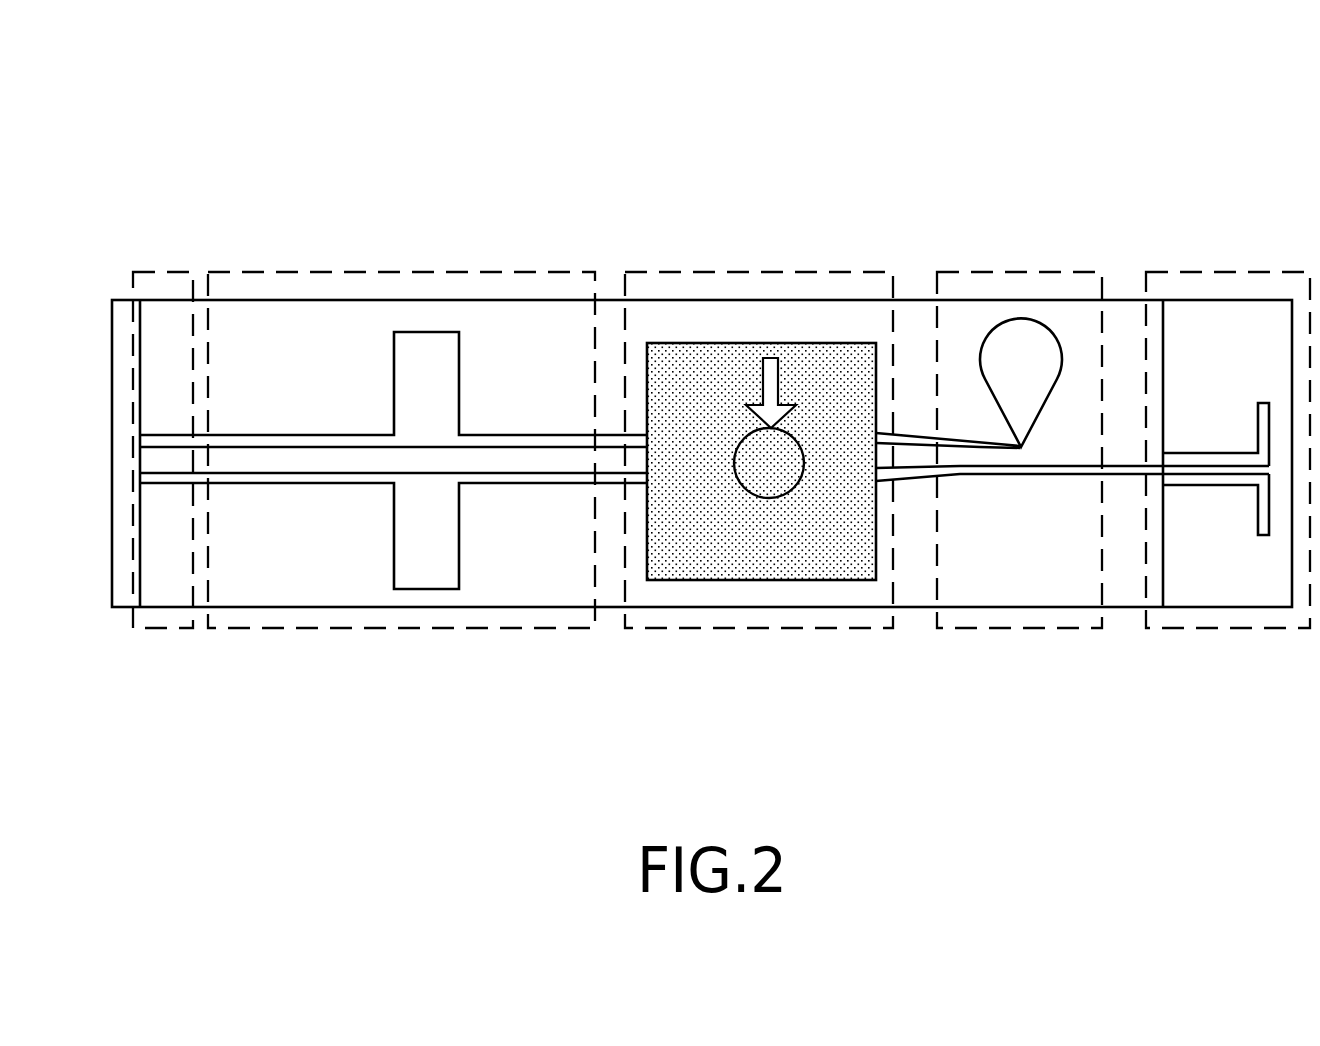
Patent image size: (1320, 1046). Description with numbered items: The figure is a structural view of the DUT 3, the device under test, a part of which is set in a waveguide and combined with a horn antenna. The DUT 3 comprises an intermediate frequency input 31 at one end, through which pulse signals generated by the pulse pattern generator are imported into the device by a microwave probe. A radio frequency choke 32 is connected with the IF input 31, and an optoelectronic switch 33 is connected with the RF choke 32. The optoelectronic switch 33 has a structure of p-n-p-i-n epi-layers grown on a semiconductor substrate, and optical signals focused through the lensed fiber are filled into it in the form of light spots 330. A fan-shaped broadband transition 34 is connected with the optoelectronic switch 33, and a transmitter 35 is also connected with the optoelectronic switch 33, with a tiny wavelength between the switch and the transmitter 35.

The DUT 3 is at (932, 166).
The intermediate frequency (IF) input 31 is at (170, 272).
The radio frequency (RF) choke 32 is at (375, 272).
The optoelectronic switch 33 is at (947, 447).
The light spots 330 is at (769, 498).
The fan-shaped broadband transition 34 is at (1017, 272).
The transmitter 35 is at (1185, 272).